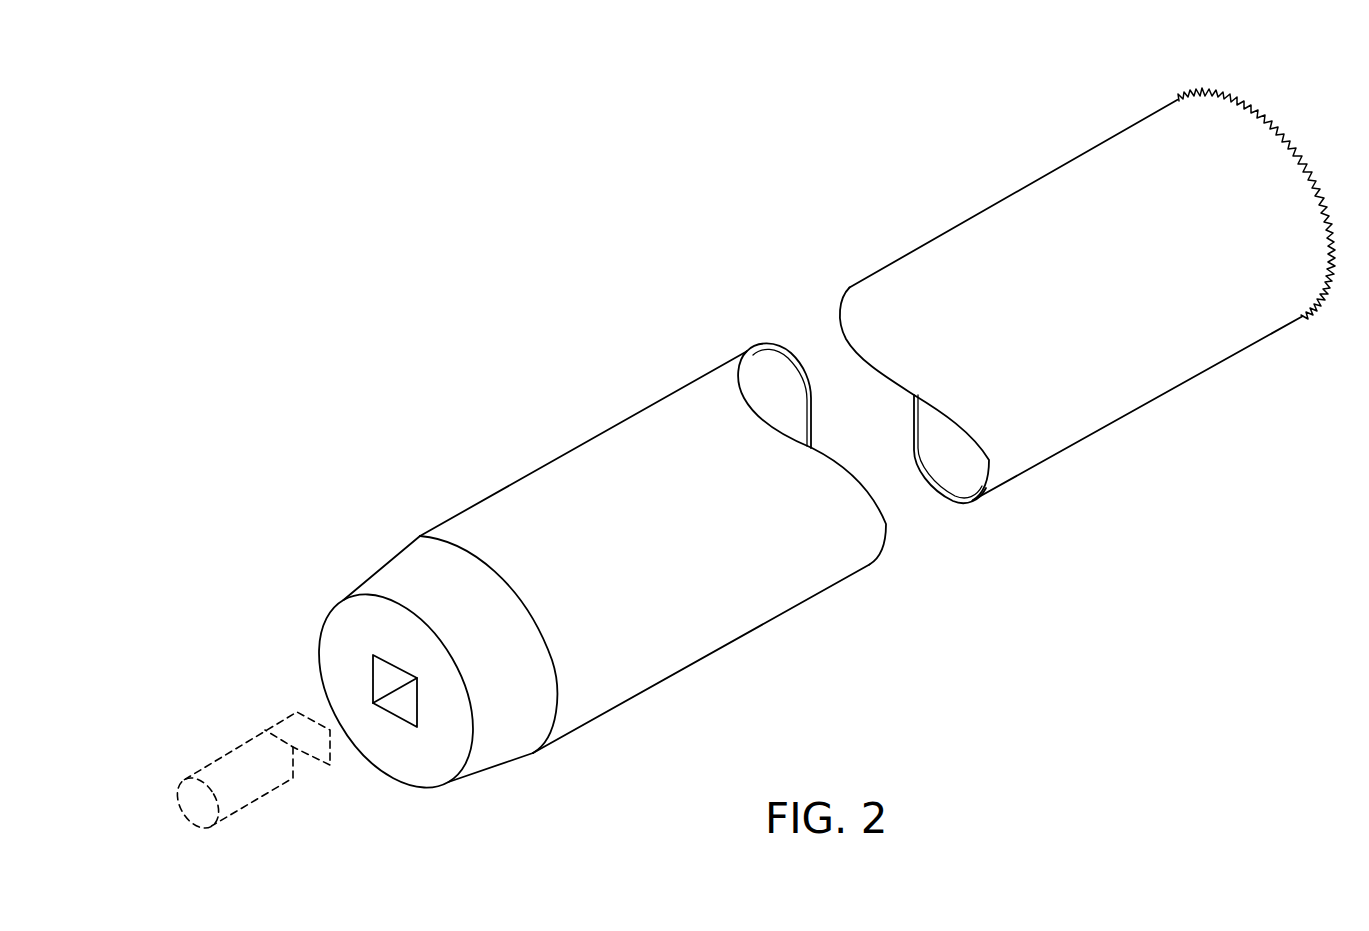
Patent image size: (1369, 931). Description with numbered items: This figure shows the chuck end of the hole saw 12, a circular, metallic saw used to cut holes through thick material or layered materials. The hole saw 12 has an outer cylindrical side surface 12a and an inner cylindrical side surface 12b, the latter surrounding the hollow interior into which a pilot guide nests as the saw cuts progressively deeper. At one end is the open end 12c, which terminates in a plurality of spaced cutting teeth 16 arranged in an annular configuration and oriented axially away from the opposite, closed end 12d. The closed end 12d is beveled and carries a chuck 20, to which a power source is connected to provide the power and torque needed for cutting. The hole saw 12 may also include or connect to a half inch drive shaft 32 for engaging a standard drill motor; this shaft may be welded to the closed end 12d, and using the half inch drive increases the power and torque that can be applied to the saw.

The hole saw 12 is at (445, 247).
The outer cylindrical side surface 12a is at (846, 568).
The inner cylindrical side surface 12b is at (768, 357).
The open end 12c is at (1278, 322).
The closed end 12d is at (323, 631).
The cutting teeth 16 is at (1258, 115).
The chuck 20 is at (407, 709).
The ½ inch drive shaft 32 is at (178, 779).